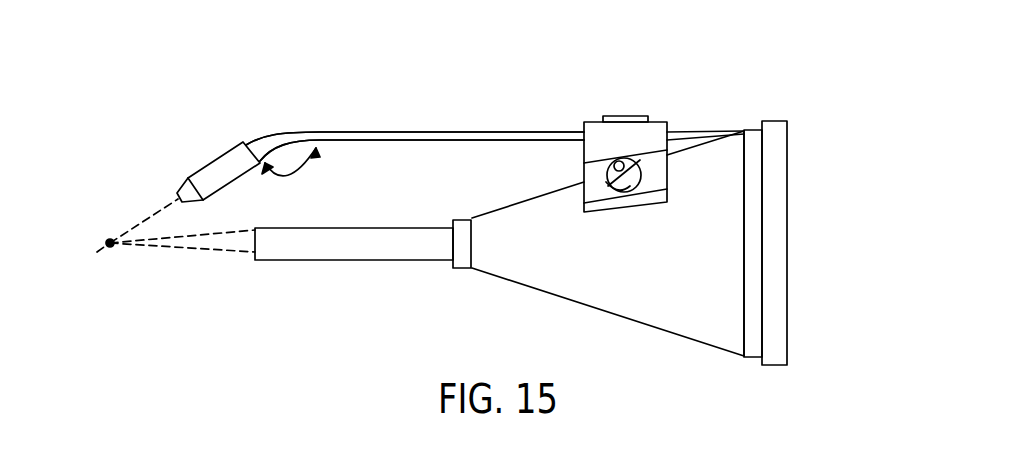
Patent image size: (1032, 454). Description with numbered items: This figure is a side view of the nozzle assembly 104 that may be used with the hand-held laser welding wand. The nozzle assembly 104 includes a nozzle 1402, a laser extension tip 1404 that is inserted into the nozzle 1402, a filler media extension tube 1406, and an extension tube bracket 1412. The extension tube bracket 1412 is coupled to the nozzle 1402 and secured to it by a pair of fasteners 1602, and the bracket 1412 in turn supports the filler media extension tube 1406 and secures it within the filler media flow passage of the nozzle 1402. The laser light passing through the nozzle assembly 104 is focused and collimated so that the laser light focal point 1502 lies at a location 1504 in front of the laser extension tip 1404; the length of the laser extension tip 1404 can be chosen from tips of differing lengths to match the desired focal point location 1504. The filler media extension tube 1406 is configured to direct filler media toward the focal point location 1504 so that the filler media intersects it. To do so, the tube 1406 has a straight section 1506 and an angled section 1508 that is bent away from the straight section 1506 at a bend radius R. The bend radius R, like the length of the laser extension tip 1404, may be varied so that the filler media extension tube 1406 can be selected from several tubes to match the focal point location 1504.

The nozzle assembly 104 is at (788, 107).
The nozzle 1402 is at (683, 281).
The laser extension tip 1404 is at (358, 261).
The filler media extension tube 1406 is at (492, 143).
The extension tube bracket 1412 is at (598, 116).
The laser light focal point 1502 is at (162, 248).
The focal point location 1504 is at (107, 238).
The straight section 1506 is at (738, 105).
The angled section 1508 is at (293, 106).
The fasteners 1602 is at (620, 165).
The bend radius R is at (284, 173).